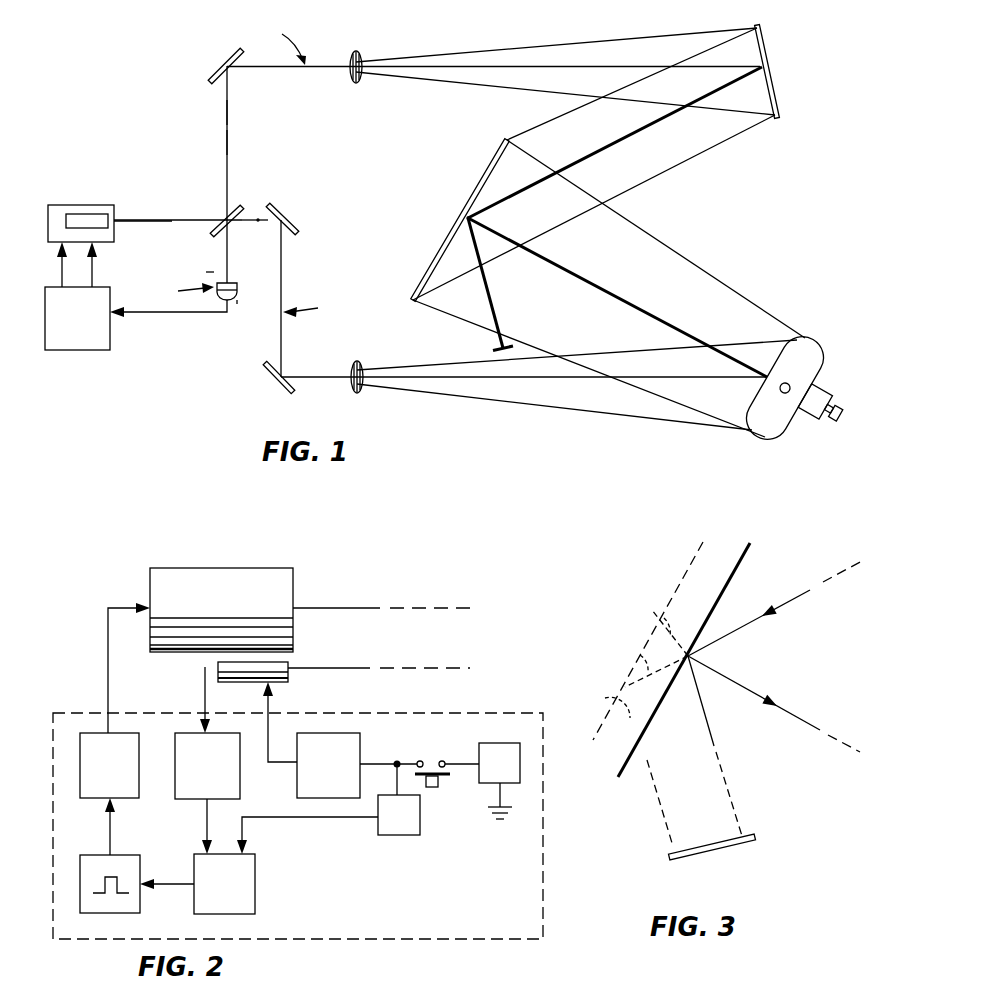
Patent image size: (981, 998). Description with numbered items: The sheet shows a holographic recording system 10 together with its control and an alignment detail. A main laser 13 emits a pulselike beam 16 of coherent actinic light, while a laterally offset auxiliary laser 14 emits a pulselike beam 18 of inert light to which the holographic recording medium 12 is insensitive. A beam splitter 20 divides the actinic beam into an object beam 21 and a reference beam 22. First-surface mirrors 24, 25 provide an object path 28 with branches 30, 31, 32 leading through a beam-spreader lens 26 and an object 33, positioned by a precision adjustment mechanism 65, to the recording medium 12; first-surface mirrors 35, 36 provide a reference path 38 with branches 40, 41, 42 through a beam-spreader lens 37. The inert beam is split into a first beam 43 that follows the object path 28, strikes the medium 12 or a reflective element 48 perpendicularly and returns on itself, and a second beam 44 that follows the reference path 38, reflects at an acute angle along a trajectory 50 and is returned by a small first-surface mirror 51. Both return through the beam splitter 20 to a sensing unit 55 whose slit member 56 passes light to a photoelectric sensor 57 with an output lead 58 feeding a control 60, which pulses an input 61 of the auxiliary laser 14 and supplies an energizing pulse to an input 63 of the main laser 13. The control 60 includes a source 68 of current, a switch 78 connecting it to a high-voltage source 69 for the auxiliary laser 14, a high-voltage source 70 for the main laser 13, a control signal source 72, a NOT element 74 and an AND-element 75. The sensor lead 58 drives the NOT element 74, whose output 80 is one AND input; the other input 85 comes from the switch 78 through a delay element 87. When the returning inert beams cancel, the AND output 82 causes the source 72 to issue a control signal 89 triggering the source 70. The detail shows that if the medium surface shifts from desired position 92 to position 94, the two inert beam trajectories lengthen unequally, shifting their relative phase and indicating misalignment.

In FIG. 1, the holographic recording system 10 is at (422, 201).
In FIG. 1, the holographic recording medium 12 is at (438, 265).
In FIG. 3, the holographic recording medium 12 is at (740, 537).
In FIG. 1, the main laser 13 is at (72, 205).
In FIG. 2, the main laser 13 is at (262, 550).
In FIG. 1, the auxiliary laser 14 is at (94, 214).
In FIG. 2, the auxiliary laser 14 is at (295, 686).
In FIG. 1, the pulselike beam of coherent actinic light 16 is at (208, 220).
In FIG. 2, the pulselike beam of coherent actinic light 16 is at (337, 608).
In FIG. 1, the pulselike beam of coherent inert light 18 is at (176, 222).
In FIG. 2, the pulselike beam of coherent inert light 18 is at (354, 668).
In FIG. 1, the beam splitter 20 is at (218, 238).
In FIG. 1, the object beam 21 is at (260, 232).
In FIG. 1, the reference beam 22 is at (227, 164).
In FIG. 1, the first-surface mirror 24 is at (298, 232).
In FIG. 1, the first-surface mirror 25 is at (270, 397).
In FIG. 1, the beam-spreader lens 26 is at (358, 392).
In FIG. 1, the object path 28 is at (352, 316).
In FIG. 1, the trajectory or branch of the object path 30 is at (280, 346).
In FIG. 1, the trajectory or branch of the object path 31 is at (560, 379).
In FIG. 1, the trajectory or branch of the object path 32 is at (630, 286).
In FIG. 1, the object 33 is at (848, 326).
In FIG. 1, the first-surface mirror 35 is at (212, 70).
In FIG. 1, the first-surface mirror 36 is at (769, 52).
In FIG. 1, the beam-spreader lens 37 is at (355, 54).
In FIG. 1, the reference path 38 is at (276, 43).
In FIG. 1, the trajectory or branch of the reference path 40 is at (227, 112).
In FIG. 1, the trajectory or branch of the reference path 41 is at (447, 59).
In FIG. 1, the trajectory or branch of the reference path 42 is at (630, 151).
In FIG. 1, the first beam of inert light 43 is at (260, 218).
In FIG. 3, the first beam of inert light 43 is at (794, 700).
In FIG. 1, the second beam of inert light 44 is at (227, 142).
In FIG. 3, the second beam of inert light 44 is at (796, 596).
In FIG. 1, the reflective element 48 is at (462, 226).
In FIG. 1, the trajectory 50 is at (498, 317).
In FIG. 3, the trajectory 50 is at (728, 738).
In FIG. 1, the small first-surface mirror 51 is at (494, 348).
In FIG. 3, the small first-surface mirror 51 is at (720, 842).
In FIG. 1, the sensing unit 55 is at (176, 304).
In FIG. 1, the aperture or slit member 56 is at (227, 274).
In FIG. 1, the photoelectric sensor 57 is at (236, 302).
In FIG. 1, the sensor output lead 58 is at (210, 318).
In FIG. 2, the sensor output lead 58 is at (205, 687).
In FIG. 1, the control 60 is at (44, 330).
In FIG. 2, the control 60 is at (52, 802).
In FIG. 1, the control line to modulator 61 is at (94, 264).
In FIG. 2, the control line to modulator 61 is at (272, 708).
In FIG. 1, the input of the main laser 63 is at (62, 265).
In FIG. 2, the input of the main laser 63 is at (108, 666).
In FIG. 1, the precision adjustment mechanism 65 is at (804, 432).
In FIG. 2, the source of electric current 68 is at (504, 722).
In FIG. 2, the high-voltage energization source 69 is at (354, 738).
In FIG. 2, the high-voltage energization source 70 is at (80, 743).
In FIG. 2, the control signal source 72 is at (80, 884).
In FIG. 2, the logical NOT element 74 is at (240, 778).
In FIG. 2, the logical AND-element 75 is at (254, 892).
In FIG. 2, the switch 78 is at (430, 762).
In FIG. 2, the NOT-element output / AND-element input 80 is at (204, 820).
In FIG. 2, the AND-element output 82 is at (189, 885).
In FIG. 2, the AND-element input 85 is at (260, 816).
In FIG. 2, the delay element 87 is at (410, 824).
In FIG. 2, the control signal 89 is at (110, 831).
In FIG. 3, the line indicating desired recording medium surface position 92 is at (632, 760).
In FIG. 3, the shifted position 94 is at (678, 578).